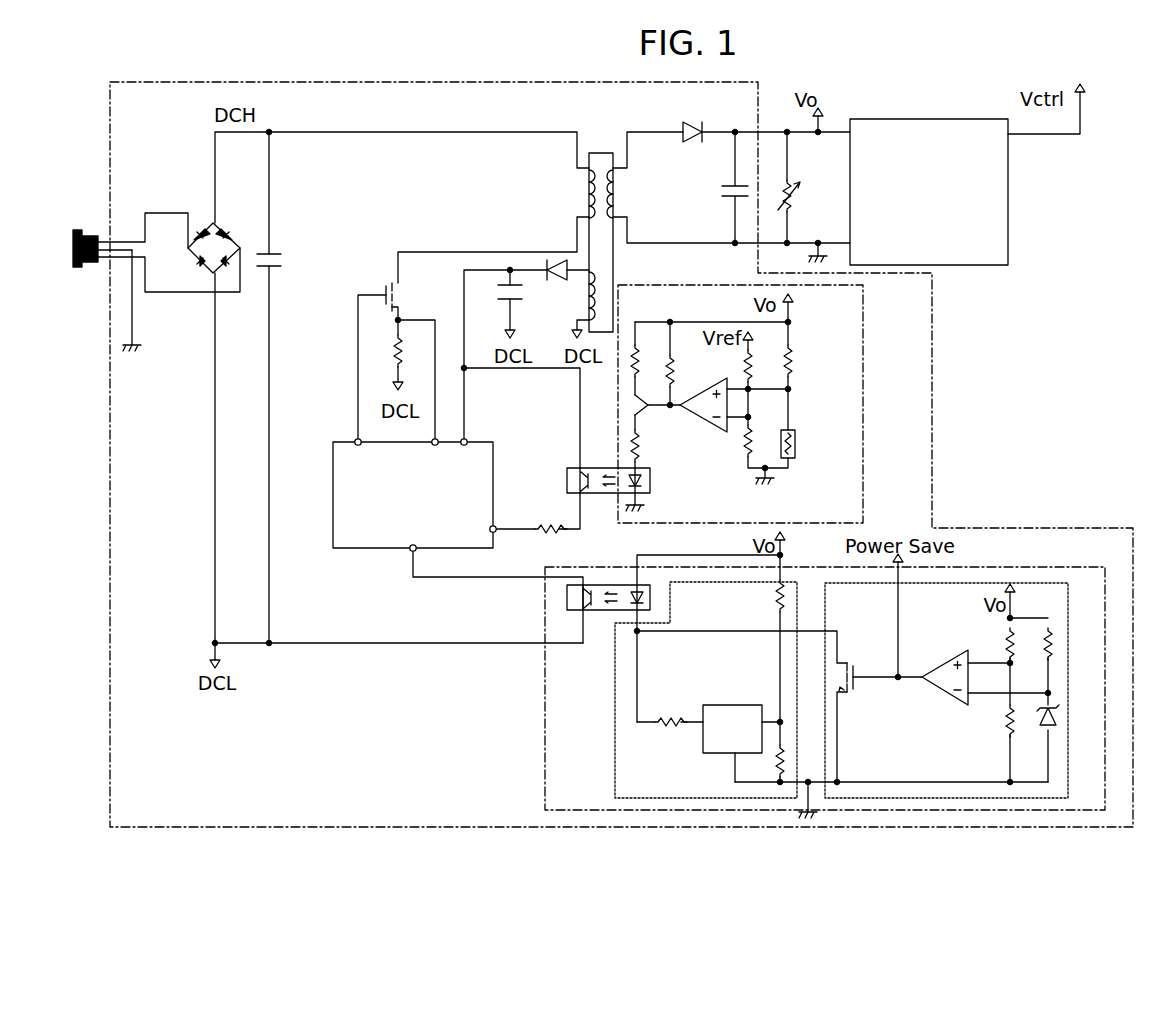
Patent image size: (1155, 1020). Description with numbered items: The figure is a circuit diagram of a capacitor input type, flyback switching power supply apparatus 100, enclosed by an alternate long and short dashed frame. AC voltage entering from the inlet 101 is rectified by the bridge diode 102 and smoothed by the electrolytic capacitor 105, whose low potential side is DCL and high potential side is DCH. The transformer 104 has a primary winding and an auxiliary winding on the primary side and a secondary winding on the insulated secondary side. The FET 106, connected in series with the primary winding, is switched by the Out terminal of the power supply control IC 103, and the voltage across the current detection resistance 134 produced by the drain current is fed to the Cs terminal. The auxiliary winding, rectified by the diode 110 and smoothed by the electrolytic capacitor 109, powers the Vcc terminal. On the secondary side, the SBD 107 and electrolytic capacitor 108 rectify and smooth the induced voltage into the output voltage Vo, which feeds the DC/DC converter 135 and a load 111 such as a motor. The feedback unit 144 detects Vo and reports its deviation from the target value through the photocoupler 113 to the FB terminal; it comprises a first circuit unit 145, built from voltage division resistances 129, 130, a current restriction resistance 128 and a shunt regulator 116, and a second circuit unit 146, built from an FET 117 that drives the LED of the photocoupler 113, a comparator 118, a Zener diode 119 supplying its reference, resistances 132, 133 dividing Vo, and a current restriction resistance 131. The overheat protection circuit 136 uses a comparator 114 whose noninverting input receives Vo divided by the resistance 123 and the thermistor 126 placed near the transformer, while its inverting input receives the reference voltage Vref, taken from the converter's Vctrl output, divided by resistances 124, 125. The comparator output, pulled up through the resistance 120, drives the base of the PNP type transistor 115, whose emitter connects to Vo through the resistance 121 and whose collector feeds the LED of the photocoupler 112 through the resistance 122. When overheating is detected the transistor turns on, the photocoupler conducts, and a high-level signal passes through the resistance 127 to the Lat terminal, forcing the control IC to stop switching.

The switching power supply apparatus 100 is at (934, 398).
The inlet 101 is at (96, 230).
The bridge diode 102 is at (203, 225).
The power supply control IC 103 is at (360, 552).
The transformer 104 is at (597, 152).
The electrolytic capacitor 105 is at (282, 268).
The FET 106 is at (384, 290).
The SBD 107 is at (692, 125).
The electrolytic capacitor 108 is at (720, 192).
The electrolytic capacitor 109 is at (505, 300).
The diode 110 is at (556, 282).
The load 111 is at (796, 205).
The photocoupler 112 is at (603, 498).
The photocoupler 113 is at (600, 612).
The comparator 114 is at (702, 420).
The PNP type transistor 115 is at (650, 412).
The shunt regulator 116 is at (702, 740).
The FET 117 is at (855, 692).
The comparator 118 is at (950, 693).
The Zener diode 119 is at (1044, 732).
The resistance 120 is at (675, 375).
The resistance 121 is at (639, 362).
The resistance 122 is at (642, 450).
The resistance 123 is at (793, 370).
The resistance 124 is at (753, 368).
The resistance 125 is at (754, 442).
The thermistor 126 is at (798, 440).
The resistance 127 is at (548, 525).
The current restriction resistance 128 is at (665, 712).
The voltage division resistance 129 is at (774, 595).
The voltage division resistance 130 is at (770, 762).
The current restriction resistance 131 is at (1044, 645).
The resistance 132 is at (1004, 645).
The resistance 133 is at (1004, 722).
The current detection resistance 134 is at (403, 347).
The DC/DC converter 135 is at (962, 266).
The overheat protection circuit 136 is at (866, 460).
The feedback unit 144 is at (995, 568).
The first circuit unit 145 is at (612, 708).
The second circuit unit 146 is at (1070, 680).